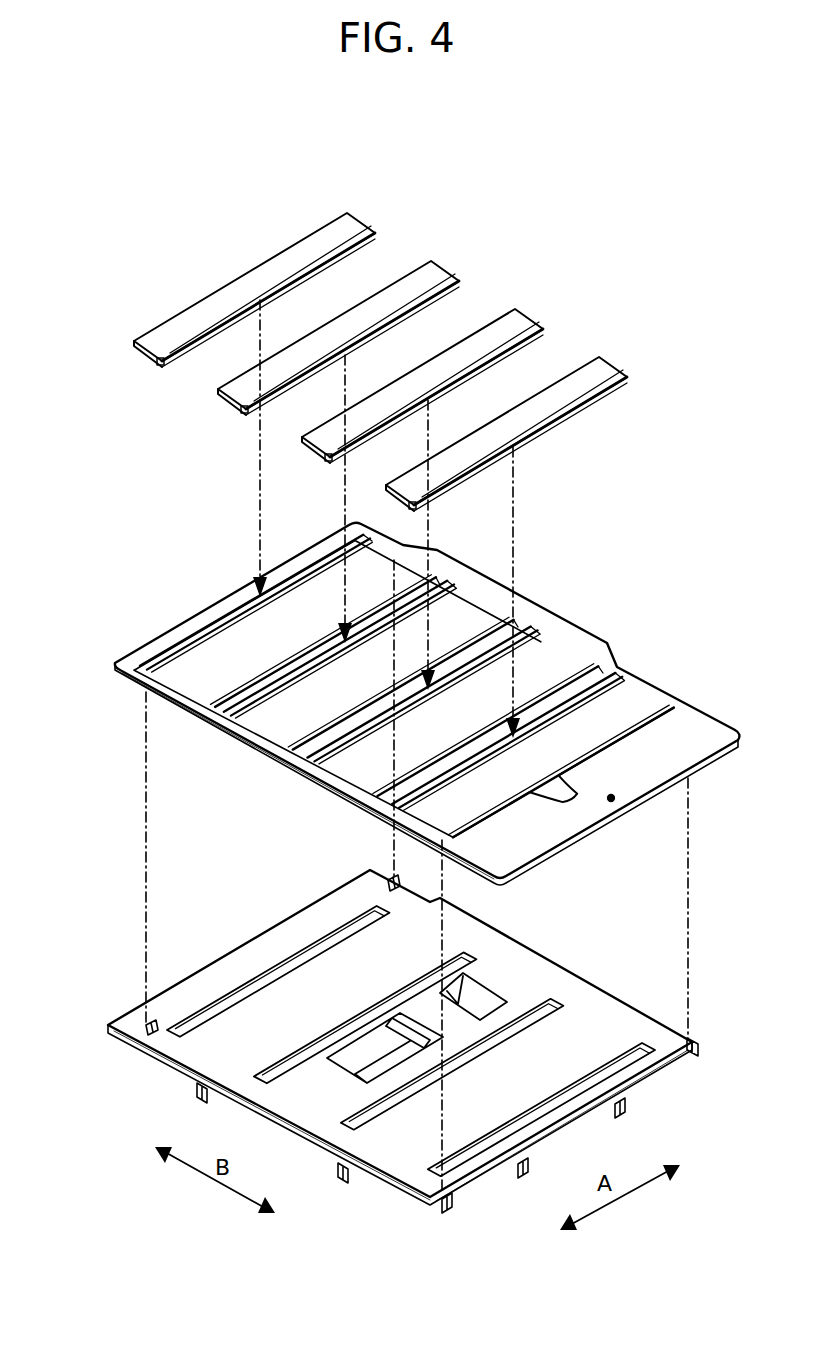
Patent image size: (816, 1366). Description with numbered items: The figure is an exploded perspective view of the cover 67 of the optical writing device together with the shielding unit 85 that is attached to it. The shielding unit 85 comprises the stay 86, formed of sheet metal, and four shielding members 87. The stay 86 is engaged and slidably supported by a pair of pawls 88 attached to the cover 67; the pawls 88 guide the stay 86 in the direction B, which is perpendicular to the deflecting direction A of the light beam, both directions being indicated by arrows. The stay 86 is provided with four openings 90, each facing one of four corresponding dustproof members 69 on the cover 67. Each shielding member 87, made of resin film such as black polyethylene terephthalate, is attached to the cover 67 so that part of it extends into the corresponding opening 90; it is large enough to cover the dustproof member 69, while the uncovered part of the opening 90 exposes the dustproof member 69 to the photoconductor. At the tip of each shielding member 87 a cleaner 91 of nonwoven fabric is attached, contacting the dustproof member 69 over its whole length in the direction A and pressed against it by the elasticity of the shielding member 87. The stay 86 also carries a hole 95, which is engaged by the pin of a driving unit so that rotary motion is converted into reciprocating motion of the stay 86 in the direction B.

The shielding unit 85 is at (108, 293).
The stay 86 is at (414, 704).
The shielding member 87 is at (358, 222).
The pawl 88 is at (151, 1036).
The opening 90 is at (205, 665).
The cleaner 91 is at (158, 366).
The hole 95 is at (615, 799).
The cover 67 is at (397, 1016).
The dustproof member 69 is at (284, 975).